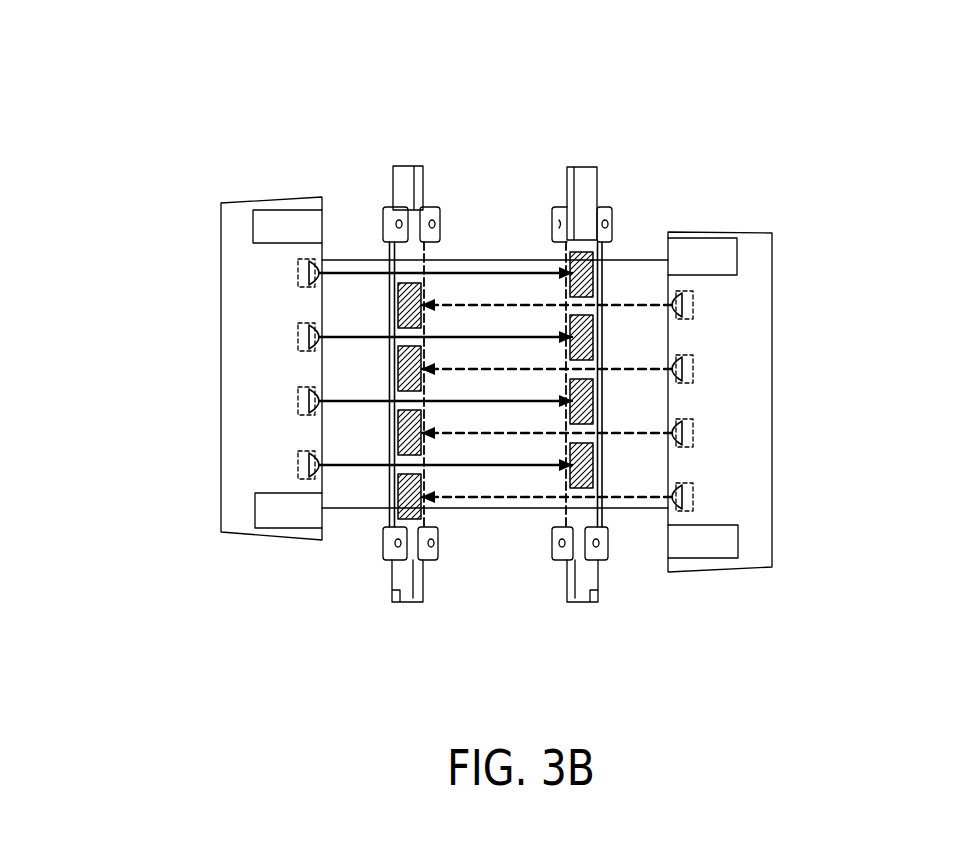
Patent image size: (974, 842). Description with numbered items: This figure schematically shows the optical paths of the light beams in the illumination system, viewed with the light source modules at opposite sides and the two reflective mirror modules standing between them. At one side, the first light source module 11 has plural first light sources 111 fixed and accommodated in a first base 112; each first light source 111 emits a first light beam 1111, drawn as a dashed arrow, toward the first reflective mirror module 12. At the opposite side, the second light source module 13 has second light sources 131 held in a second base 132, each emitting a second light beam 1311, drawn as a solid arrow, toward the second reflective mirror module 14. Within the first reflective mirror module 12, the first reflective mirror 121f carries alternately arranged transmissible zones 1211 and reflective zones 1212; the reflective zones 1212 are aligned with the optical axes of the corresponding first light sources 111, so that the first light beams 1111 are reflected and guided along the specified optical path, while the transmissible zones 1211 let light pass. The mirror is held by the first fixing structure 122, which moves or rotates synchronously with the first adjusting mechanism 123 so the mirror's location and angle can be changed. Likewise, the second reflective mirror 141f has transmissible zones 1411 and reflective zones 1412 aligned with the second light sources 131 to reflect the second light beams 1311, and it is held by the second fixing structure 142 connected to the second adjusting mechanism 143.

The first light source module 11 is at (873, 323).
The first light source 111 is at (693, 492).
The first base 112 is at (755, 487).
The first light beam 1111 is at (633, 433).
The first reflective mirror module 12 is at (407, 627).
The first reflective mirror 121f is at (317, 93).
The transmissible zone 1211 is at (407, 268).
The reflective zone 1212 is at (407, 307).
The first fixing structure 122 is at (436, 208).
The first adjusting mechanism 123 is at (405, 187).
The second light source module 13 is at (113, 303).
The second light source 131 is at (298, 460).
The second base 132 is at (235, 470).
The second light beam 1311 is at (362, 400).
The second reflective mirror module 14 is at (595, 630).
The second reflective mirror 141f is at (753, 200).
The transmissible zone 1411 is at (590, 302).
The reflective zone 1412 is at (600, 278).
The second fixing structure 142 is at (607, 210).
The second adjusting mechanism 143 is at (584, 183).